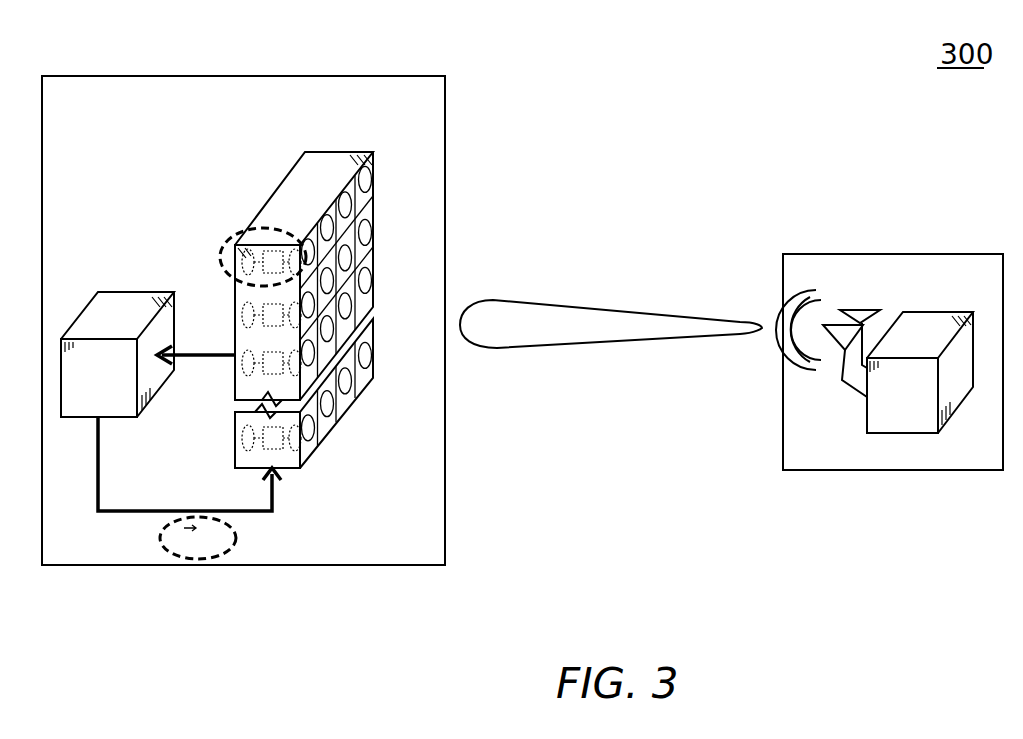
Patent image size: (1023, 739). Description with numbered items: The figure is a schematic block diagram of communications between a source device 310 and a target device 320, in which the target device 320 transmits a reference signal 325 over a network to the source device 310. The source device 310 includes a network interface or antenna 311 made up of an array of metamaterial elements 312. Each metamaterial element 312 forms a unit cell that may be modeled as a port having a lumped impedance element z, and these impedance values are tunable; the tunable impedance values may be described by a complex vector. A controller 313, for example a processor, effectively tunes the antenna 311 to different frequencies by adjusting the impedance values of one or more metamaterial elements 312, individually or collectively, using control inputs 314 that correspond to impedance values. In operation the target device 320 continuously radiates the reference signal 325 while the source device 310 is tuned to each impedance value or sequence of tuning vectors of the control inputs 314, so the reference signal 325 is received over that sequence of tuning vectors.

The source device 310 is at (433, 104).
The antenna 311 is at (302, 178).
The metamaterial element 312 is at (236, 243).
The controller 313 is at (115, 308).
The control inputs 314 is at (238, 532).
The target device 320 is at (988, 282).
The reference signal 325 is at (623, 322).